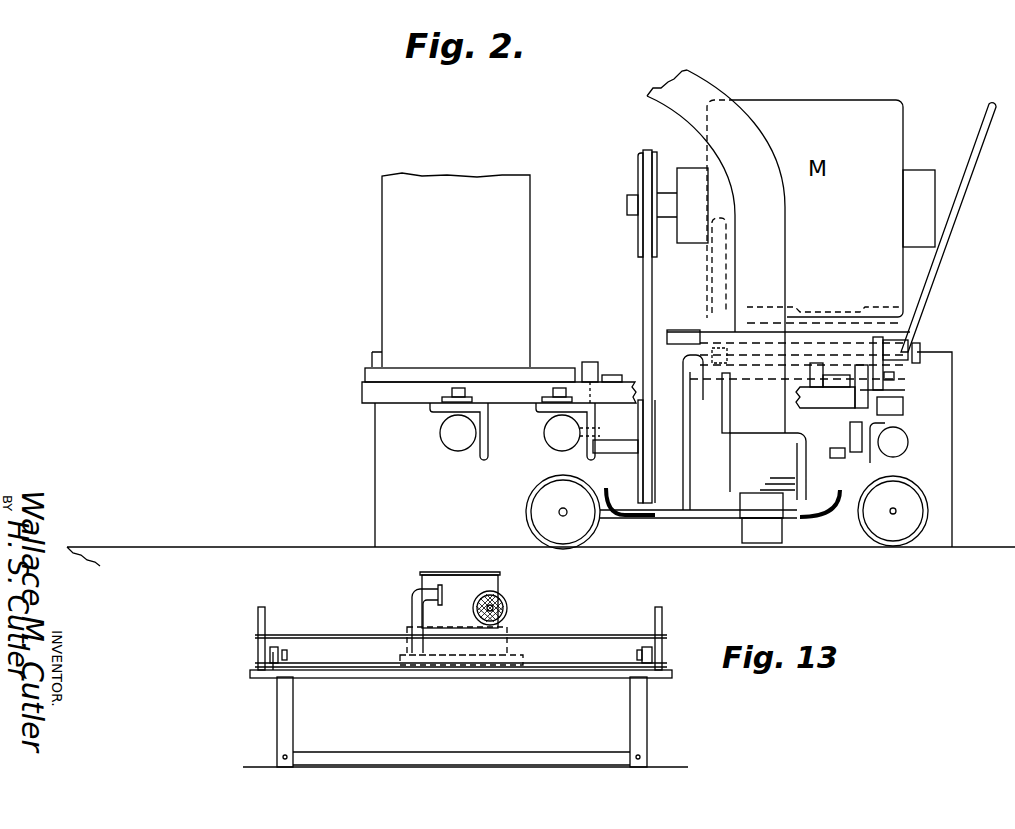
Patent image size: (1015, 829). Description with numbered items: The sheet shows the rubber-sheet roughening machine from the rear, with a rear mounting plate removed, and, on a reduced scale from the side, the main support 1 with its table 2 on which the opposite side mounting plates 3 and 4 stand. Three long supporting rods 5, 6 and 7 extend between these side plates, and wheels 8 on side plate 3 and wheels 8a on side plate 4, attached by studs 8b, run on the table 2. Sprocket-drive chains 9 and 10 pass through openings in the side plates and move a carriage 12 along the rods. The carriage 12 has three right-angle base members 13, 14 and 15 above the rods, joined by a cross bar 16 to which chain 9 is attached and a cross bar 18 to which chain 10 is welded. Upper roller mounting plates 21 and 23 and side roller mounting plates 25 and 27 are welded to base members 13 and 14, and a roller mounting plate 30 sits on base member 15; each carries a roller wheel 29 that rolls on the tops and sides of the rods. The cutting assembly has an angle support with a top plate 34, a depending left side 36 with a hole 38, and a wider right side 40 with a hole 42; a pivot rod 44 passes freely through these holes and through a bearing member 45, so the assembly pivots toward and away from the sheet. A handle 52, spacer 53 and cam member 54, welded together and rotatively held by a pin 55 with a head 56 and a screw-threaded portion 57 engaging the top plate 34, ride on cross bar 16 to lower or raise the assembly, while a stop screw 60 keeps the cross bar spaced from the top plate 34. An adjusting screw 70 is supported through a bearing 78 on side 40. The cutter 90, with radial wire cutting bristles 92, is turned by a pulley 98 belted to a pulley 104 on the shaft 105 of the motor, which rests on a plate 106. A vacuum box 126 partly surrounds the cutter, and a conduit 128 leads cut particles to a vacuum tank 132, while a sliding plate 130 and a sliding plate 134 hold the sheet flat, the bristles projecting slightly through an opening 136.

In FIG. 13, the main support 1 is at (290, 690).
In FIG. 2, the table 2 is at (212, 543).
In FIG. 13, the table 2 is at (365, 678).
In FIG. 2, the side mounting plate 3 is at (375, 449).
In FIG. 13, the side mounting plate 3 is at (266, 612).
In FIG. 13, the side mounting plate 4 is at (662, 612).
In FIG. 2, the supporting rod 5 is at (889, 443).
In FIG. 13, the supporting rod 5 is at (344, 636).
In FIG. 2, the supporting rod 6 is at (562, 433).
In FIG. 2, the supporting rod 7 is at (458, 433).
In FIG. 2, the wheel 8 is at (900, 488).
In FIG. 13, the wheel 8 is at (278, 648).
In FIG. 13, the wheel 8a is at (648, 640).
In FIG. 2, the stud 8b is at (890, 513).
In FIG. 2, the sprocket-drive chain 9 is at (838, 365).
In FIG. 2, the sprocket-drive chain 10 is at (608, 375).
In FIG. 2, the carriage 12 is at (671, 533).
In FIG. 2, the right-angle base member 13 is at (905, 415).
In FIG. 2, the right-angle base member 14 is at (545, 409).
In FIG. 2, the right-angle base member 15 is at (489, 452).
In FIG. 2, the cross bar 16 is at (905, 393).
In FIG. 2, the cross bar 18 is at (418, 393).
In FIG. 2, the upper roller mounting plate 21 is at (905, 410).
In FIG. 2, the upper roller mounting plate 23 is at (553, 395).
In FIG. 2, the side roller mounting plate 25 is at (860, 462).
In FIG. 2, the side roller mounting plate 27 is at (598, 440).
In FIG. 2, the roller wheel 29 is at (458, 388).
In FIG. 2, the roller mounting plate 30 is at (470, 397).
In FIG. 2, the top plate 34 is at (700, 345).
In FIG. 2, the left side 36 is at (895, 366).
In FIG. 2, the hole 38 is at (860, 388).
In FIG. 2, the wider side 40 is at (658, 421).
In FIG. 2, the hole 42 is at (652, 340).
In FIG. 2, the pivot rod 44 is at (778, 380).
In FIG. 2, the bearing member 45 is at (592, 362).
In FIG. 2, the handle 52 is at (966, 186).
In FIG. 2, the spacer 53 is at (878, 337).
In FIG. 2, the cam member 54 is at (890, 350).
In FIG. 2, the pin 55 is at (930, 362).
In FIG. 2, the head 56 is at (915, 345).
In FIG. 2, the screw-threaded portion 57 is at (855, 345).
In FIG. 2, the stop screw 60 is at (713, 318).
In FIG. 2, the adjusting screw 70 is at (706, 432).
In FIG. 2, the bearing 78 is at (700, 370).
In FIG. 2, the cutter 90 is at (783, 528).
In FIG. 2, the wire cutting bristle 92 is at (783, 543).
In FIG. 2, the pulley 98 is at (650, 469).
In FIG. 2, the pulley 104 is at (642, 160).
In FIG. 2, the shaft 105 is at (632, 197).
In FIG. 2, the plate 106 is at (645, 282).
In FIG. 2, the vacuum box 126 is at (768, 466).
In FIG. 2, the conduit 128 is at (697, 86).
In FIG. 13, the conduit 128 is at (415, 596).
In FIG. 2, the sliding plate 130 is at (760, 545).
In FIG. 2, the vacuum tank 132 is at (451, 270).
In FIG. 13, the vacuum tank 132 is at (490, 578).
In FIG. 2, the sliding plate 134 is at (690, 518).
In FIG. 2, the opening 136 is at (735, 515).